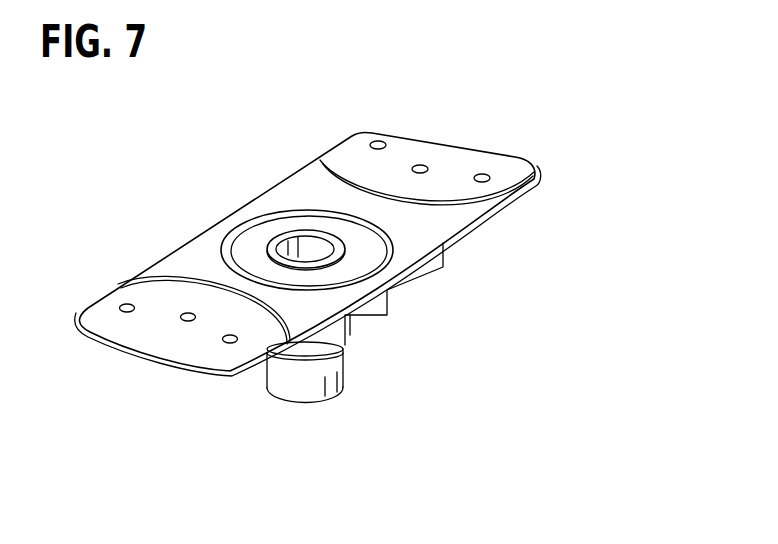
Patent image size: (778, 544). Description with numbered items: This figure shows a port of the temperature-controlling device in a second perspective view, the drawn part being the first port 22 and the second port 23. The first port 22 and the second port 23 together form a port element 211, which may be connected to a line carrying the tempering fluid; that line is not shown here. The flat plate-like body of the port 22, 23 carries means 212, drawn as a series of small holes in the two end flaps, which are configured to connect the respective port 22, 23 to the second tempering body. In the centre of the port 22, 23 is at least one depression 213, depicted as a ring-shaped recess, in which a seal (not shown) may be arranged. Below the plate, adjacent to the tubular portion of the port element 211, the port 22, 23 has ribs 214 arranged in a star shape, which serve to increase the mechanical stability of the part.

The first port 22 is at (376, 230).
The second port 23 is at (548, 152).
The port element 211 is at (302, 394).
The means 212 is at (420, 165).
The depression 213 is at (227, 248).
The ribs 214 is at (374, 308).